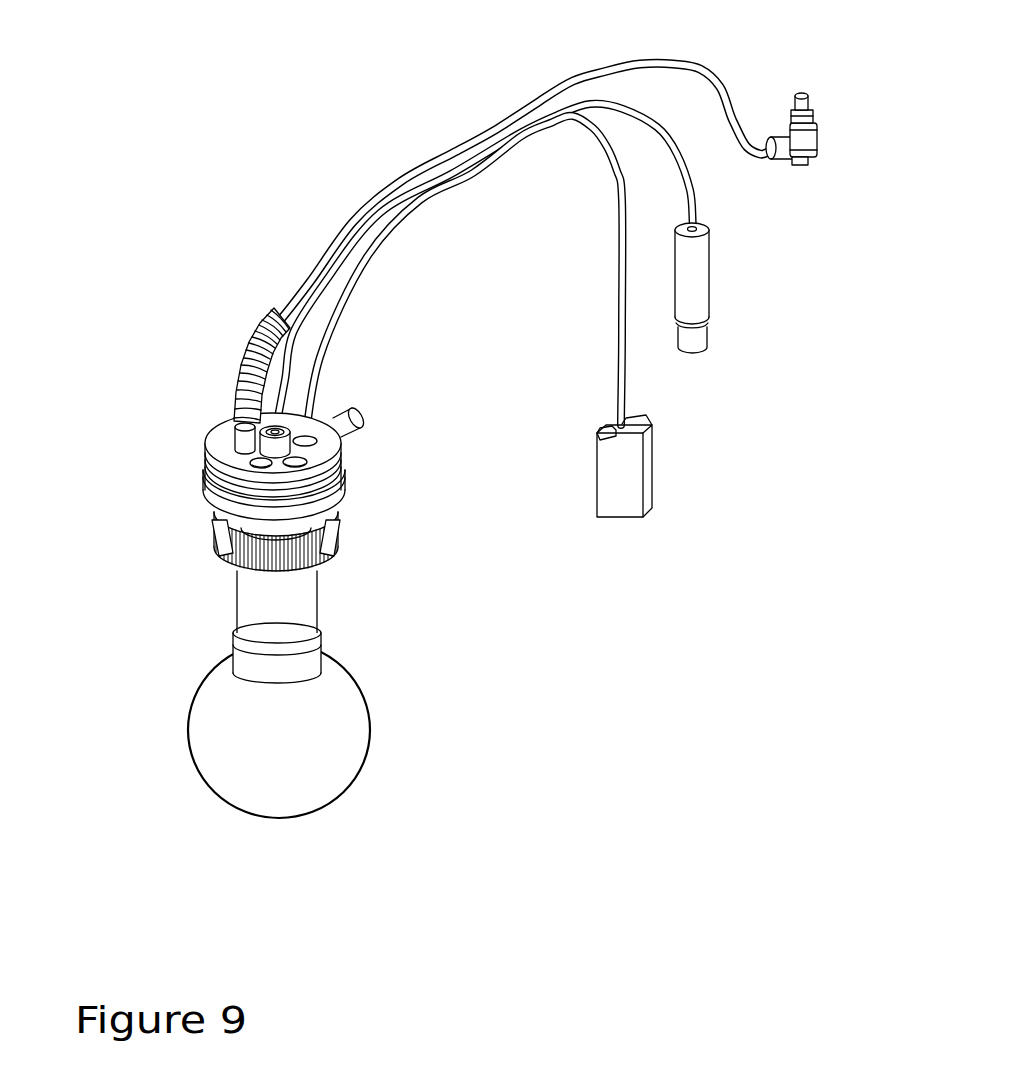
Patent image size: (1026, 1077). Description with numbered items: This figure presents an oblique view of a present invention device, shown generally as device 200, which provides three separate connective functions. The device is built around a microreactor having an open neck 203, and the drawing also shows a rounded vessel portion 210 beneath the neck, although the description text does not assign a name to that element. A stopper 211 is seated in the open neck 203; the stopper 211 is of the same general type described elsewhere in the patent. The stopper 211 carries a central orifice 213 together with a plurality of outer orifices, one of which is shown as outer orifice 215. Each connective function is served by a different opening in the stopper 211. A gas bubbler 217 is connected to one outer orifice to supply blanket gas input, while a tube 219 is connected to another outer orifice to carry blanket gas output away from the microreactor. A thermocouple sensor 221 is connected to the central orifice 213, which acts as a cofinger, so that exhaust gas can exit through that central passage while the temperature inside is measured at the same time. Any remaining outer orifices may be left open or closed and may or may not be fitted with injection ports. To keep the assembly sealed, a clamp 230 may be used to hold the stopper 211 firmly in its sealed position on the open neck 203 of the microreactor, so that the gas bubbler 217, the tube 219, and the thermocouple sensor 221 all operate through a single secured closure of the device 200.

The device 200 is at (303, 563).
The open neck 203 is at (235, 622).
The bulb 210 is at (372, 725).
The stopper 211 is at (210, 468).
The central orifice 213 is at (255, 428).
The outer orifice 215 is at (312, 458).
The gas bubbler 217 is at (715, 245).
The tube 219 is at (705, 58).
The thermocouple sensor 221 is at (615, 295).
The clamp 230 is at (213, 553).